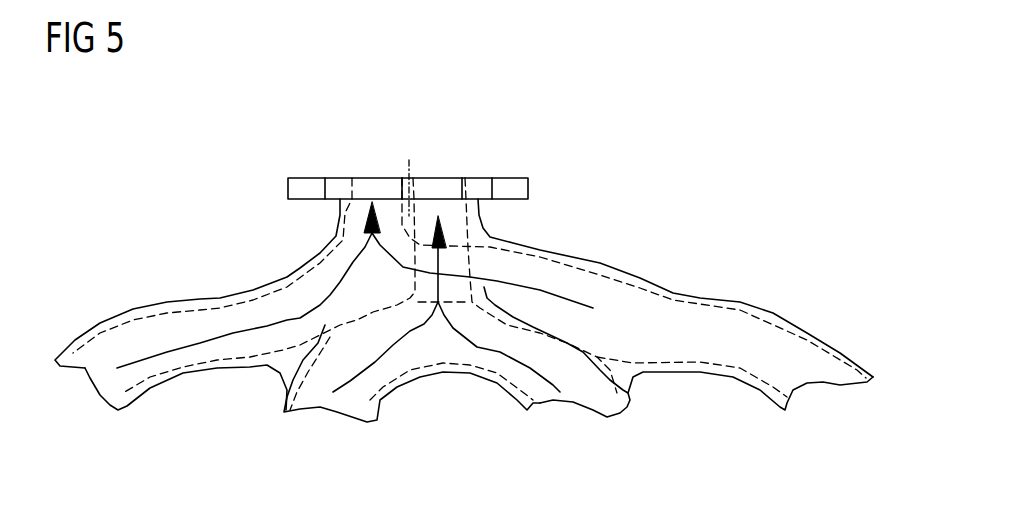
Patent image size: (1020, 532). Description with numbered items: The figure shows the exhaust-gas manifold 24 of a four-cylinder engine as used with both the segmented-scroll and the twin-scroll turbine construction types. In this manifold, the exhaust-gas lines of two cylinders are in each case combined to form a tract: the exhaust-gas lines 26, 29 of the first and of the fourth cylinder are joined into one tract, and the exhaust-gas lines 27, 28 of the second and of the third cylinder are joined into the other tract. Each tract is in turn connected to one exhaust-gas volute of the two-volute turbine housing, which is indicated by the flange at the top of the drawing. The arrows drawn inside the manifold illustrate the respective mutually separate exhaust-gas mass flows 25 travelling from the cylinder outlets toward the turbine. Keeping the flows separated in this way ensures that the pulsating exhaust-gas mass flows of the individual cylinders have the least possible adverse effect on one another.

The exhaust-gas manifold 24 is at (675, 293).
The exhaust-gas mass flows 25 is at (393, 348).
The exhaust-gas line 26 is at (85, 363).
The exhaust-gas line 27 is at (313, 392).
The exhaust-gas line 28 is at (588, 392).
The exhaust-gas line 29 is at (828, 363).